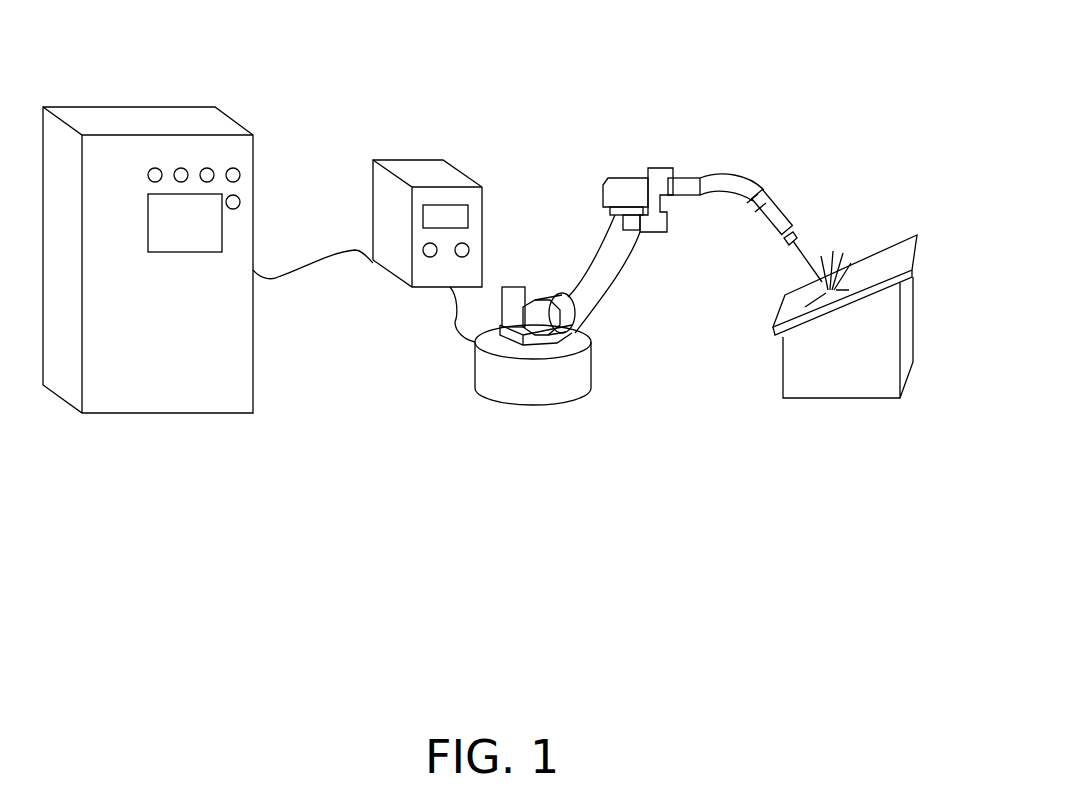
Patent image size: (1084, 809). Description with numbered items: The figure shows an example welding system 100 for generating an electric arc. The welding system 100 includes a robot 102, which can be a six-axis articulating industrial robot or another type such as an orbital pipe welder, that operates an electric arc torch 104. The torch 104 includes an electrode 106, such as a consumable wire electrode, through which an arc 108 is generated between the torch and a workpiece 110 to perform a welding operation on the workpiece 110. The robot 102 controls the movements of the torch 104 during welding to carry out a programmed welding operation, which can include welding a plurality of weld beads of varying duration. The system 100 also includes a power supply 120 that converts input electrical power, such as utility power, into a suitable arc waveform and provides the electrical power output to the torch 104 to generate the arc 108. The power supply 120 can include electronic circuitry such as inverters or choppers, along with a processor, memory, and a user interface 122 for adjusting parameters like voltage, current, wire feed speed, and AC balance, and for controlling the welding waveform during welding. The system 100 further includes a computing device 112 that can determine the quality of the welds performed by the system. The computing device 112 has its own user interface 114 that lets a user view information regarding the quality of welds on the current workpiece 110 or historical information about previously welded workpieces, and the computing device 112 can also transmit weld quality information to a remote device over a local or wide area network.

The welding system 100 is at (804, 38).
The robot 102 is at (690, 175).
The electric arc torch 104 is at (788, 224).
The electrode 106 is at (812, 277).
The arc 108 is at (848, 278).
The workpiece 110 is at (907, 237).
The computing device 112 is at (160, 105).
The user interface 114 is at (248, 181).
The power supply 120 is at (455, 163).
The user interface 122 is at (475, 227).